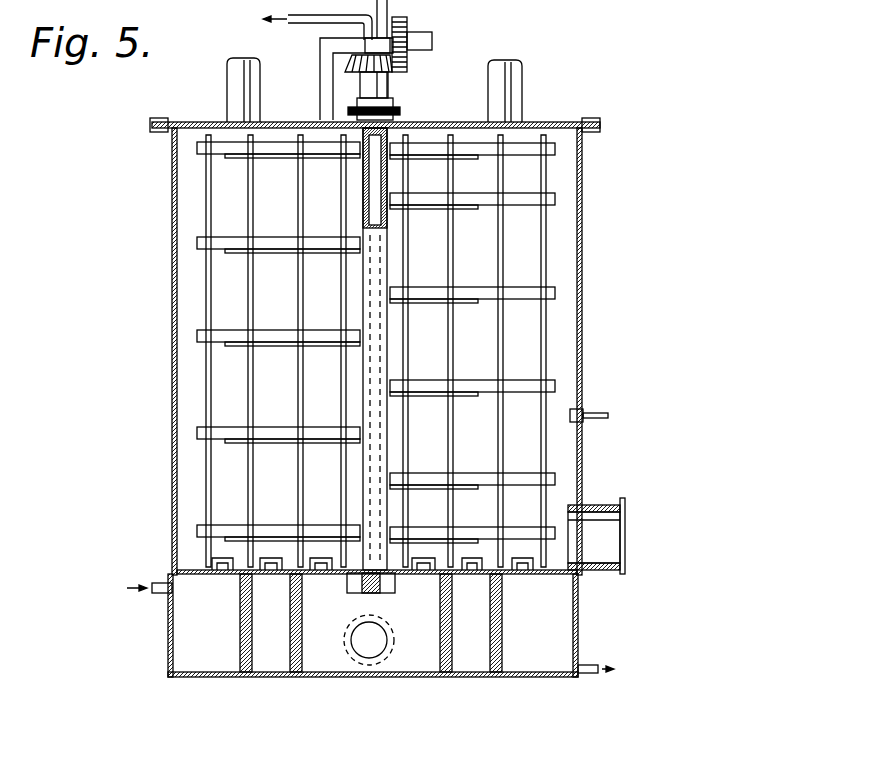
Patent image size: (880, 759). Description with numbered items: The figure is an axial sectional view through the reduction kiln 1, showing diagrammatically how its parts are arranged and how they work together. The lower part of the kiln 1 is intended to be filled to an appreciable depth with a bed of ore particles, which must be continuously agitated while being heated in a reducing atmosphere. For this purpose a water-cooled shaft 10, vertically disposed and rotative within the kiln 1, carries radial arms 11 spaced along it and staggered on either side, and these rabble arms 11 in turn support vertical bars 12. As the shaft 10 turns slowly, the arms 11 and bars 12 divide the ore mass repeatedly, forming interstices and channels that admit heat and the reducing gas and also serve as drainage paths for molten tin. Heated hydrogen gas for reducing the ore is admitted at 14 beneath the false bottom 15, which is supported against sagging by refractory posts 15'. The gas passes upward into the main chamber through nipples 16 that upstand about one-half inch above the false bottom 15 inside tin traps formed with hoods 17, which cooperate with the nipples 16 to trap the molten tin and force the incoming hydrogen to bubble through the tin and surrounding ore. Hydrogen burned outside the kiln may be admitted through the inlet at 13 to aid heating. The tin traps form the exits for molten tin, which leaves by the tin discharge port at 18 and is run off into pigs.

The kiln 1 is at (170, 352).
The water-cooled shaft 10 is at (385, 370).
The radial arms 11 is at (490, 202).
The vertical bars 12 is at (338, 393).
The inlet 13 is at (600, 423).
The hydrogen gas inlet 14 is at (155, 594).
The false bottom 15 is at (590, 554).
The refractory posts 15' is at (371, 623).
The nipples 16 is at (222, 576).
The hoods 17 is at (270, 556).
The tin discharge port 18 is at (586, 674).